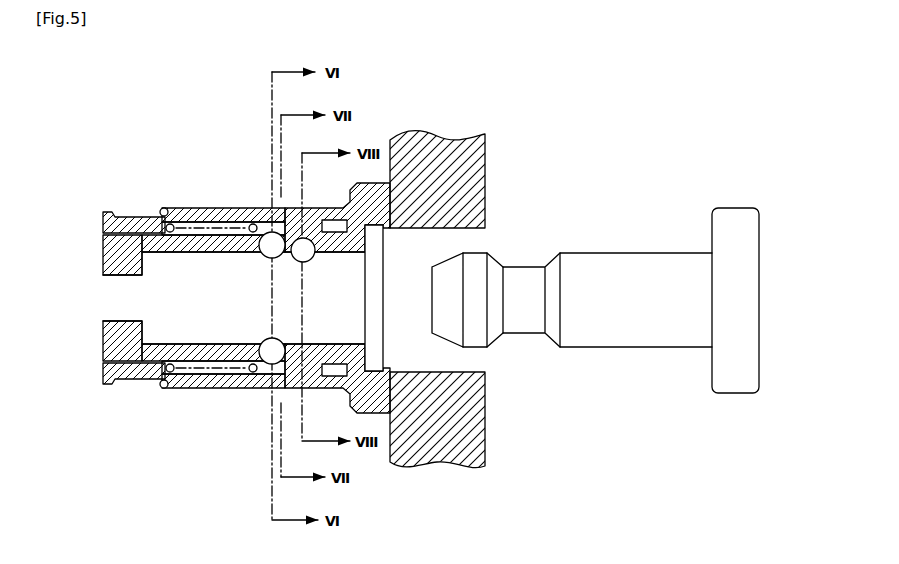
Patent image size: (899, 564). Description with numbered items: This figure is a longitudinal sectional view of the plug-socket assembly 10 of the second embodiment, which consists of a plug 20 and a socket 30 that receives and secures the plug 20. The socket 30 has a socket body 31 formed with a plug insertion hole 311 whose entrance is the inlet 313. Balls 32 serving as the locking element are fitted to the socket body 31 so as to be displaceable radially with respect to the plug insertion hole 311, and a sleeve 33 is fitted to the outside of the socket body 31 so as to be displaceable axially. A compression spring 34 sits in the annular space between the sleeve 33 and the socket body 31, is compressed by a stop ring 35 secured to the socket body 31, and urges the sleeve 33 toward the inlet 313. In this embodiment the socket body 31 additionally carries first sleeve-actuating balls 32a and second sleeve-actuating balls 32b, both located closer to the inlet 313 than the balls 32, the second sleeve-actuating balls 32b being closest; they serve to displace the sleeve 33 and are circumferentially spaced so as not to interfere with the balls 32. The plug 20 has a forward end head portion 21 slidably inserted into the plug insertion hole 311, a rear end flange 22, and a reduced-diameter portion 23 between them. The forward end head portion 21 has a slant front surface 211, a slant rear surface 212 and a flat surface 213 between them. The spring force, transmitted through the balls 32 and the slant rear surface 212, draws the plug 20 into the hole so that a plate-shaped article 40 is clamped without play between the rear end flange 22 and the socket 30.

The plug-socket assembly 10 is at (600, 125).
The plug 20 is at (654, 385).
The forward end head portion 21 is at (483, 236).
The rear end flange 22 is at (727, 208).
The reduced-diameter portion 23 is at (520, 333).
The socket 30 is at (150, 410).
The socket body 31 is at (110, 258).
The plug insertion hole 311 is at (175, 304).
The inlet 313 is at (378, 225).
The balls 32 is at (266, 255).
The first sleeve-actuating balls 32a is at (271, 363).
The second sleeve-actuating balls 32b is at (312, 260).
The sleeve 33 is at (200, 210).
The compression spring 34 is at (165, 215).
The stop ring 35 is at (128, 226).
The plate-shaped article 40 is at (420, 135).
The slant front surface 211 is at (447, 345).
The slant rear surface 212 is at (495, 265).
The flat surface 213 is at (475, 337).